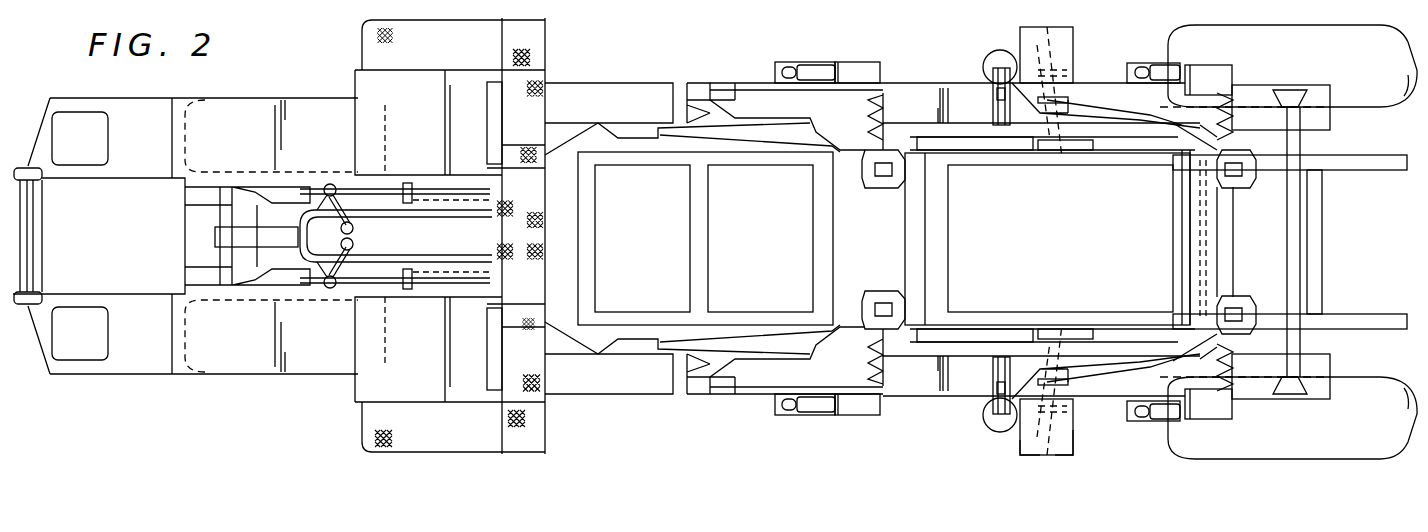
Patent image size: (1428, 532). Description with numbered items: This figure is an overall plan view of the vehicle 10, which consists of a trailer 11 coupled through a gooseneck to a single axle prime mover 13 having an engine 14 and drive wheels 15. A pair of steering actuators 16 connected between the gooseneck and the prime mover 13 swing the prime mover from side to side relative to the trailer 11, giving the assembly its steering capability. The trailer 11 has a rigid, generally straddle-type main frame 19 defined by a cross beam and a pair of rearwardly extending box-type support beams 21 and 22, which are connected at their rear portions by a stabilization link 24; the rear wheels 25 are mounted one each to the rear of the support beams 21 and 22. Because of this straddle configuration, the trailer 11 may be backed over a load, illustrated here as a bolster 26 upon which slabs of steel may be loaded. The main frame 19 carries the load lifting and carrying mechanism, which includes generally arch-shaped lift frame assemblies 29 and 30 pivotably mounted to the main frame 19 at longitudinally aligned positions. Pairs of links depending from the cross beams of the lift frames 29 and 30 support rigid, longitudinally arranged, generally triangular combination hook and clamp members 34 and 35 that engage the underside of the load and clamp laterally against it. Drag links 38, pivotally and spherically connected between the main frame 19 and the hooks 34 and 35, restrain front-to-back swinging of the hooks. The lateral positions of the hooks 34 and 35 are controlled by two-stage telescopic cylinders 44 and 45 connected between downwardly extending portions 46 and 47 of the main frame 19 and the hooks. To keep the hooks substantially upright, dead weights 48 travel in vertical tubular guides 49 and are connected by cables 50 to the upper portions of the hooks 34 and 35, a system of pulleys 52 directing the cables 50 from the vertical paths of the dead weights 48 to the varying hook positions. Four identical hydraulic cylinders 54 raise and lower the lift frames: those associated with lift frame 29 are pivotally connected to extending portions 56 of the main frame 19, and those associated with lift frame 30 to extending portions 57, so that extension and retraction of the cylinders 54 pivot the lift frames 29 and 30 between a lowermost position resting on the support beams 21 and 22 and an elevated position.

The vehicle 10 is at (98, 394).
The trailer 11 is at (643, 74).
The prime mover 13 is at (304, 76).
The engine 14 is at (108, 198).
The drive wheels 15 is at (270, 93).
The steering actuators 16 is at (388, 188).
The main frame 19 is at (902, 76).
The support beam 21 is at (597, 63).
The support beam 22 is at (625, 395).
The stabilization link 24 is at (1302, 143).
The rear wheels 25 is at (1400, 27).
The bolster 26 is at (663, 165).
The lift frame assembly 29 is at (742, 100).
The lift frame assembly 30 is at (1105, 100).
The combination hook and clamp member 34 is at (1120, 150).
The combination hook and clamp member 35 is at (1130, 338).
The drag links 38 is at (750, 138).
The cylinder 44 is at (1047, 28).
The cylinder 45 is at (1020, 448).
The downwardly extending portion 46 is at (1063, 27).
The downwardly extending portion 47 is at (1073, 444).
The dead weights 48 is at (1002, 66).
The vertical tubular guides 49 is at (991, 56).
The cables 50 is at (995, 95).
The system of pulleys 52 is at (984, 112).
The hydraulic cylinders 54 is at (803, 62).
The extending portions 56 is at (773, 66).
The extending portions 57 is at (1132, 62).